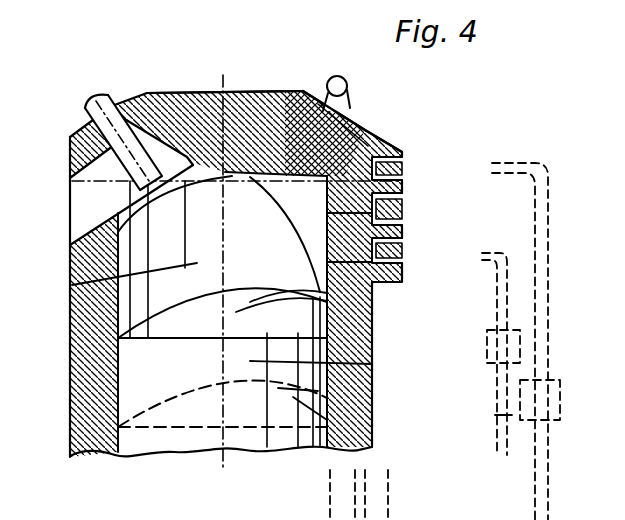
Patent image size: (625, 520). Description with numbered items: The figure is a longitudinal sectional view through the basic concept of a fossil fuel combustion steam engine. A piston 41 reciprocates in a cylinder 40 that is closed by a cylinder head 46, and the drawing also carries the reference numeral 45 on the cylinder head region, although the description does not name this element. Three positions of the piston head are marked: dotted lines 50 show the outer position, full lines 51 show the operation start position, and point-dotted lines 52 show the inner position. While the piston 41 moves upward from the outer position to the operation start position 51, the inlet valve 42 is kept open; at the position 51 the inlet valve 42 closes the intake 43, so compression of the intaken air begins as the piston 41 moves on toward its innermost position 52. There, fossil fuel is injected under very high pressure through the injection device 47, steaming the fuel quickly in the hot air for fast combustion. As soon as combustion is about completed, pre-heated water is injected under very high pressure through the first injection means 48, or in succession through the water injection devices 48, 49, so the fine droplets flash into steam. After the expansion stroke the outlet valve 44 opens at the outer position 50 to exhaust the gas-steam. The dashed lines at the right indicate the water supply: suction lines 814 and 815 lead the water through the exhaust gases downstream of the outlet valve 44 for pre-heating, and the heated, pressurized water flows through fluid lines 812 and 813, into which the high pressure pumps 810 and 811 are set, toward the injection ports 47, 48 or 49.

The cylinder 40 is at (72, 285).
The piston 41 is at (372, 364).
The inlet valve 42 is at (72, 181).
The intake 43 is at (83, 208).
The outlet valve 44 is at (348, 98).
The crown shoulder 45 is at (370, 129).
The cylinder head 46 is at (234, 94).
The injection device 47 is at (402, 166).
The first water injection means 48 is at (402, 213).
The water injection device 49 is at (402, 258).
The dotted lines 50 is at (372, 380).
The full lines 51 is at (372, 305).
The point-dotted lines 52 is at (372, 294).
The high pressure pump 810 is at (490, 358).
The high pressure pump 811 is at (530, 417).
The fluid line 812 is at (498, 459).
The fluid line 813 is at (540, 483).
The suction line 814 is at (378, 492).
The suction line 815 is at (340, 492).